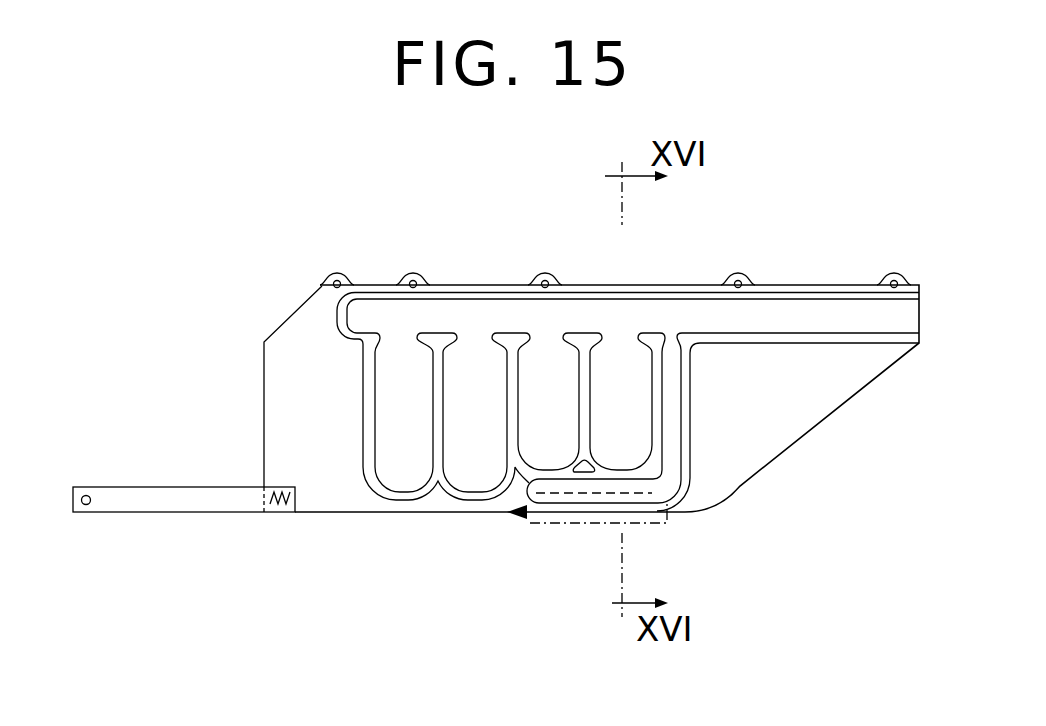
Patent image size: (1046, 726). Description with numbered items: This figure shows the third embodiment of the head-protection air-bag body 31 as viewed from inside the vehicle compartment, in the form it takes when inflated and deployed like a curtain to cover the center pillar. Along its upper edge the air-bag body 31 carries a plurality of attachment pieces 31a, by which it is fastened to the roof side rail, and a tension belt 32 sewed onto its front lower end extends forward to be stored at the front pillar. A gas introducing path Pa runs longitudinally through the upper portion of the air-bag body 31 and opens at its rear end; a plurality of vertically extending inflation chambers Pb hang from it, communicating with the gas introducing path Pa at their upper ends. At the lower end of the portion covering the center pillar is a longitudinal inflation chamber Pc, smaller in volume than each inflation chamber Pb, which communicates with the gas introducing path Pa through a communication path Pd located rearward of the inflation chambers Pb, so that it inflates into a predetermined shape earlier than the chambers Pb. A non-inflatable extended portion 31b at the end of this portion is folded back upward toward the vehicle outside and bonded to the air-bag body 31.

The head-protection air-bag body 31 is at (733, 490).
The attachment pieces 31a is at (338, 273).
The non-inflatable extended portion 31b is at (530, 523).
The tension belt 32 is at (170, 500).
The gas introducing path Pa is at (577, 316).
The vertically extending inflation chambers Pb is at (399, 476).
The longitudinal inflation chamber Pc is at (582, 484).
The communication path Pd is at (788, 427).